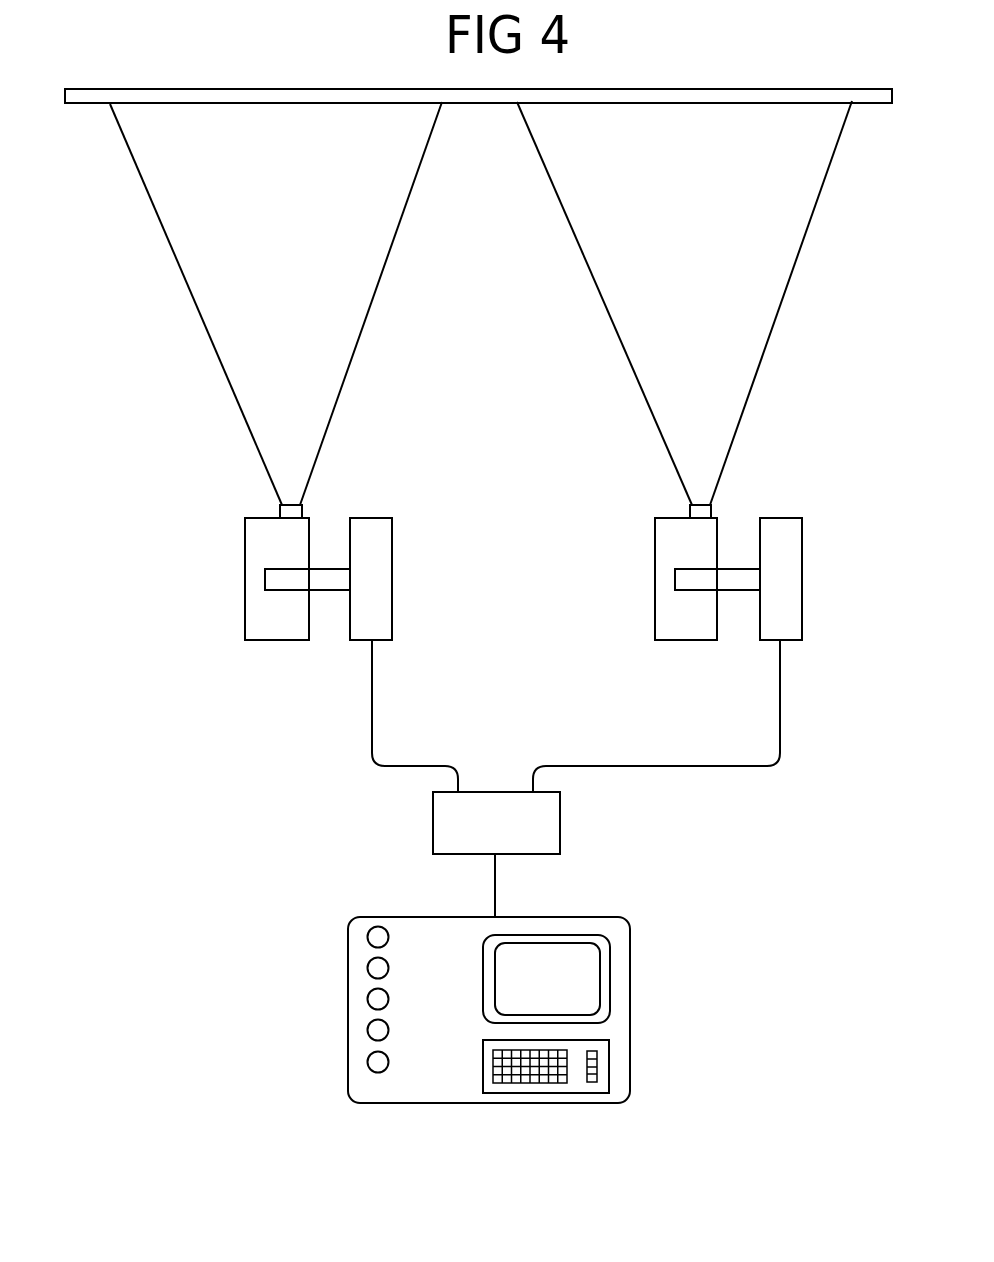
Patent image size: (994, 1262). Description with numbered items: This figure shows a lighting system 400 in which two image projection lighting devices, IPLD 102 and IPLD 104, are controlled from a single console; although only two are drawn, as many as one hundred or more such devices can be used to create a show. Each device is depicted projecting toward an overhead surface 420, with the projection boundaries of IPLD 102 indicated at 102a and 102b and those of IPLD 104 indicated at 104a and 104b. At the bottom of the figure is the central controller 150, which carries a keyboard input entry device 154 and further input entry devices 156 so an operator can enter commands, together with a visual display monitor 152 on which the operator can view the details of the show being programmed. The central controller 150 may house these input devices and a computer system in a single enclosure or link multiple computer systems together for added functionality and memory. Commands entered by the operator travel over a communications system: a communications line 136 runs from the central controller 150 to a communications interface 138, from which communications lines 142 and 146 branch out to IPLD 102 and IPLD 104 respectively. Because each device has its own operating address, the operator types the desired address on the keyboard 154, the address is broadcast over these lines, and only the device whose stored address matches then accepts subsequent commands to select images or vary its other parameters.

The lighting system 400 is at (102, 312).
The target surface / reference bar 420 is at (308, 116).
The IPLD 102 is at (233, 609).
The first camera field of view boundary 102a is at (218, 341).
The first camera field of view boundary 102b is at (373, 325).
The IPLD 104 is at (818, 612).
The second camera field of view boundary 104a is at (620, 318).
The second camera field of view boundary 104b is at (781, 308).
The communications line 142 is at (356, 707).
The communications line 146 is at (600, 767).
The communications interface 138 is at (433, 832).
The communications line 136 is at (500, 893).
The central controller 150 is at (348, 1003).
The visual display monitor 152 is at (615, 974).
The keyboard input entry device 154 is at (615, 1065).
The input entry devices 156 is at (405, 990).